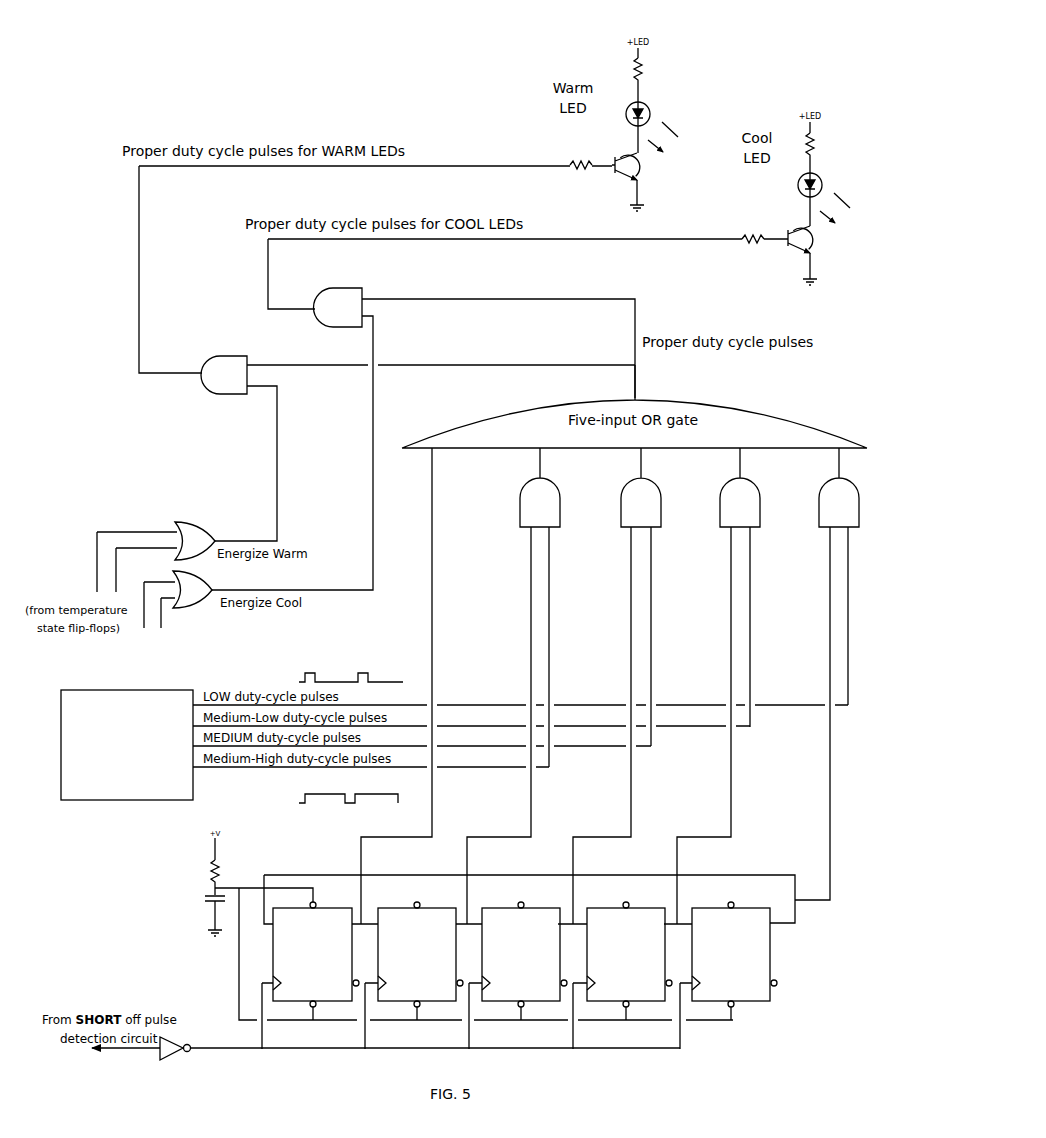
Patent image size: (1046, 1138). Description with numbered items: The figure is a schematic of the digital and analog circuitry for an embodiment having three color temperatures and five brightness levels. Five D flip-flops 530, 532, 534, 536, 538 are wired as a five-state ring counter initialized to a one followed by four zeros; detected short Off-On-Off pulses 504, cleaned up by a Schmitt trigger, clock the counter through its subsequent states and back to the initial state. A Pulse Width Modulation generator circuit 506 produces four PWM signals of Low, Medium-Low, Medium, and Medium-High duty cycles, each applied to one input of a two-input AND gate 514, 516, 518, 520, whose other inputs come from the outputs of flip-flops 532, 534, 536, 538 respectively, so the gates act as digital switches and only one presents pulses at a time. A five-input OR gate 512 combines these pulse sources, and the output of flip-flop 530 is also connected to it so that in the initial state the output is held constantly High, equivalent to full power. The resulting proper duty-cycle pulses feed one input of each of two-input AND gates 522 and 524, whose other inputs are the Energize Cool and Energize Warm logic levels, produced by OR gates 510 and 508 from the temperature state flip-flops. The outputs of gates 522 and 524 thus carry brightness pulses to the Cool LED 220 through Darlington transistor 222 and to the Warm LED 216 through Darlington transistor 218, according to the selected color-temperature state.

The Warm LED 216 is at (626, 103).
The Darlington transistor 218 is at (610, 155).
The Cool LED 220 is at (800, 175).
The Darlington transistor 222 is at (787, 228).
The detected short Off-On-Off pulses 504 is at (158, 1002).
The Pulse Width Modulation generator circuit 506 is at (135, 812).
The energize warm OR gate 508 is at (165, 522).
The energize cool OR gate 510 is at (192, 612).
The five-input OR gate 512 is at (790, 408).
The 2-input AND gate 514 is at (508, 505).
The 2-input AND gate 516 is at (610, 505).
The 2-input AND gate 518 is at (710, 505).
The 2-input AND gate 520 is at (808, 505).
The 2-input AND gate 522 is at (305, 326).
The 2-input AND gate 524 is at (196, 396).
The D flip-flop 530 is at (338, 903).
The D flip-flop 532 is at (443, 903).
The D flip-flop 534 is at (547, 903).
The D flip-flop 536 is at (652, 903).
The D flip-flop 538 is at (757, 903).